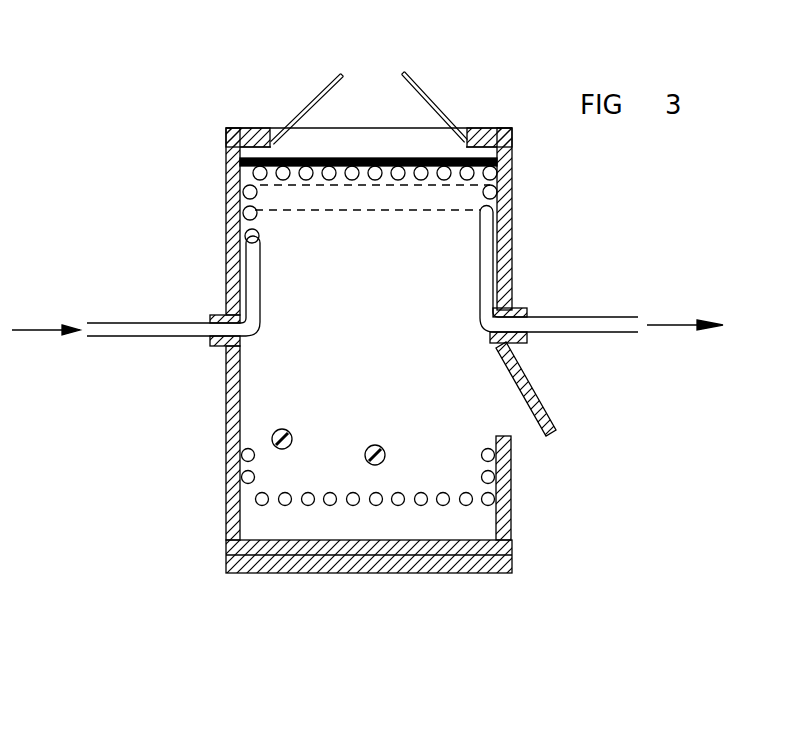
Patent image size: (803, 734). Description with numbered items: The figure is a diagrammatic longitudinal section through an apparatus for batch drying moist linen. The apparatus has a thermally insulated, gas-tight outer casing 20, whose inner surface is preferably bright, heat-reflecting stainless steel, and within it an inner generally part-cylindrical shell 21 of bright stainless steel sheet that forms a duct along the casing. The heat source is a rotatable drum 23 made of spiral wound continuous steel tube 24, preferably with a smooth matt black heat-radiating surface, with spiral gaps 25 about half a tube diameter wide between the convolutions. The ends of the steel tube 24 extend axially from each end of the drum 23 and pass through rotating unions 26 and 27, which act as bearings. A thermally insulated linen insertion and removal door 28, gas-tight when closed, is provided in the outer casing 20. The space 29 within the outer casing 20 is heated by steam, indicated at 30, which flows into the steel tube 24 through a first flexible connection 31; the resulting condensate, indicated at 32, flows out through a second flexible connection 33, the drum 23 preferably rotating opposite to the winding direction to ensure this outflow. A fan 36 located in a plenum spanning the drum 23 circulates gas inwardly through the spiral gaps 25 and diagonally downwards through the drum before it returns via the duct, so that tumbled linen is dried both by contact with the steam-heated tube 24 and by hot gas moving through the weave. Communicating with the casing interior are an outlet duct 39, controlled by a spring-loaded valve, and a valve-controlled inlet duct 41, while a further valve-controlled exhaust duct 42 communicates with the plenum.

The outer casing 20 is at (508, 175).
The inner shell 21 is at (407, 160).
The rotatable drum 23 is at (255, 503).
The steel tube 24 is at (398, 503).
The spiral gaps 25 is at (298, 503).
The rotating union 26 is at (213, 347).
The rotating union 27 is at (520, 308).
The linen insertion and removal door 28 is at (545, 405).
The space 29 is at (385, 400).
The steam 30 is at (52, 330).
The first flexible connection 31 is at (128, 334).
The condensate 32 is at (667, 325).
The second flexible connection 33 is at (580, 323).
The fan 36 is at (322, 197).
The outlet duct 39 is at (272, 437).
The inlet duct 41 is at (373, 467).
The exhaust duct 42 is at (367, 83).